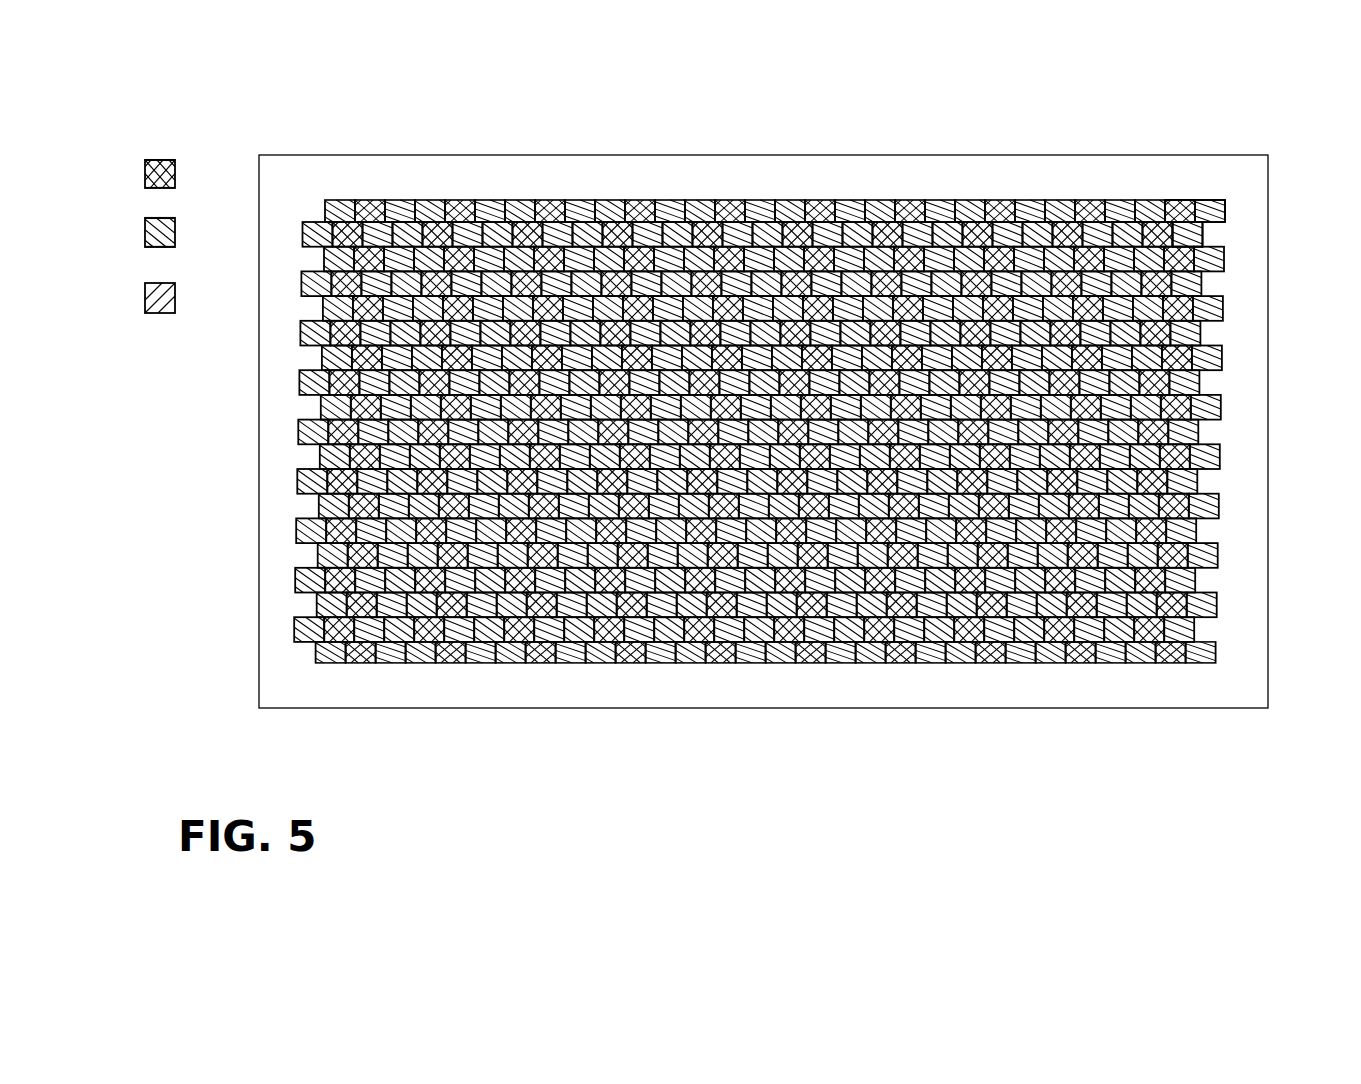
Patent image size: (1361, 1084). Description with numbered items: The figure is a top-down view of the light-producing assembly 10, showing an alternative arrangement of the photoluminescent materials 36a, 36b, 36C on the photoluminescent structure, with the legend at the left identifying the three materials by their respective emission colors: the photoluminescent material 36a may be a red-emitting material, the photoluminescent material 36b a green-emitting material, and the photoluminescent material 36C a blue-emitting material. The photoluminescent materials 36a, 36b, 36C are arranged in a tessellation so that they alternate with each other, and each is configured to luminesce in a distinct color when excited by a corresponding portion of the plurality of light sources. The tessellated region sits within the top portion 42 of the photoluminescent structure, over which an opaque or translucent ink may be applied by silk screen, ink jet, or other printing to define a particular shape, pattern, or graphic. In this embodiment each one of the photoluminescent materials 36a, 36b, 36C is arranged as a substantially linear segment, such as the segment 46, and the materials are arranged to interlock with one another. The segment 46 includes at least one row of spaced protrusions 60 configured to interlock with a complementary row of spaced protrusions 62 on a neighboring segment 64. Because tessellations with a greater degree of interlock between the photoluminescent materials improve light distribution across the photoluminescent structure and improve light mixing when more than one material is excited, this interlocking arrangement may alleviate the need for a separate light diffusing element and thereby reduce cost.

The light-producing assembly 10 is at (1132, 75).
The top portion 42 is at (662, 160).
The segment 46 is at (1180, 200).
The spaced protrusions 60 is at (1188, 200).
The segment 64 is at (1217, 212).
The spaced protrusions 62 is at (1202, 233).
The photoluminescent material 36a is at (145, 173).
The photoluminescent material 36b is at (145, 232).
The photoluminescent material 36C is at (145, 297).